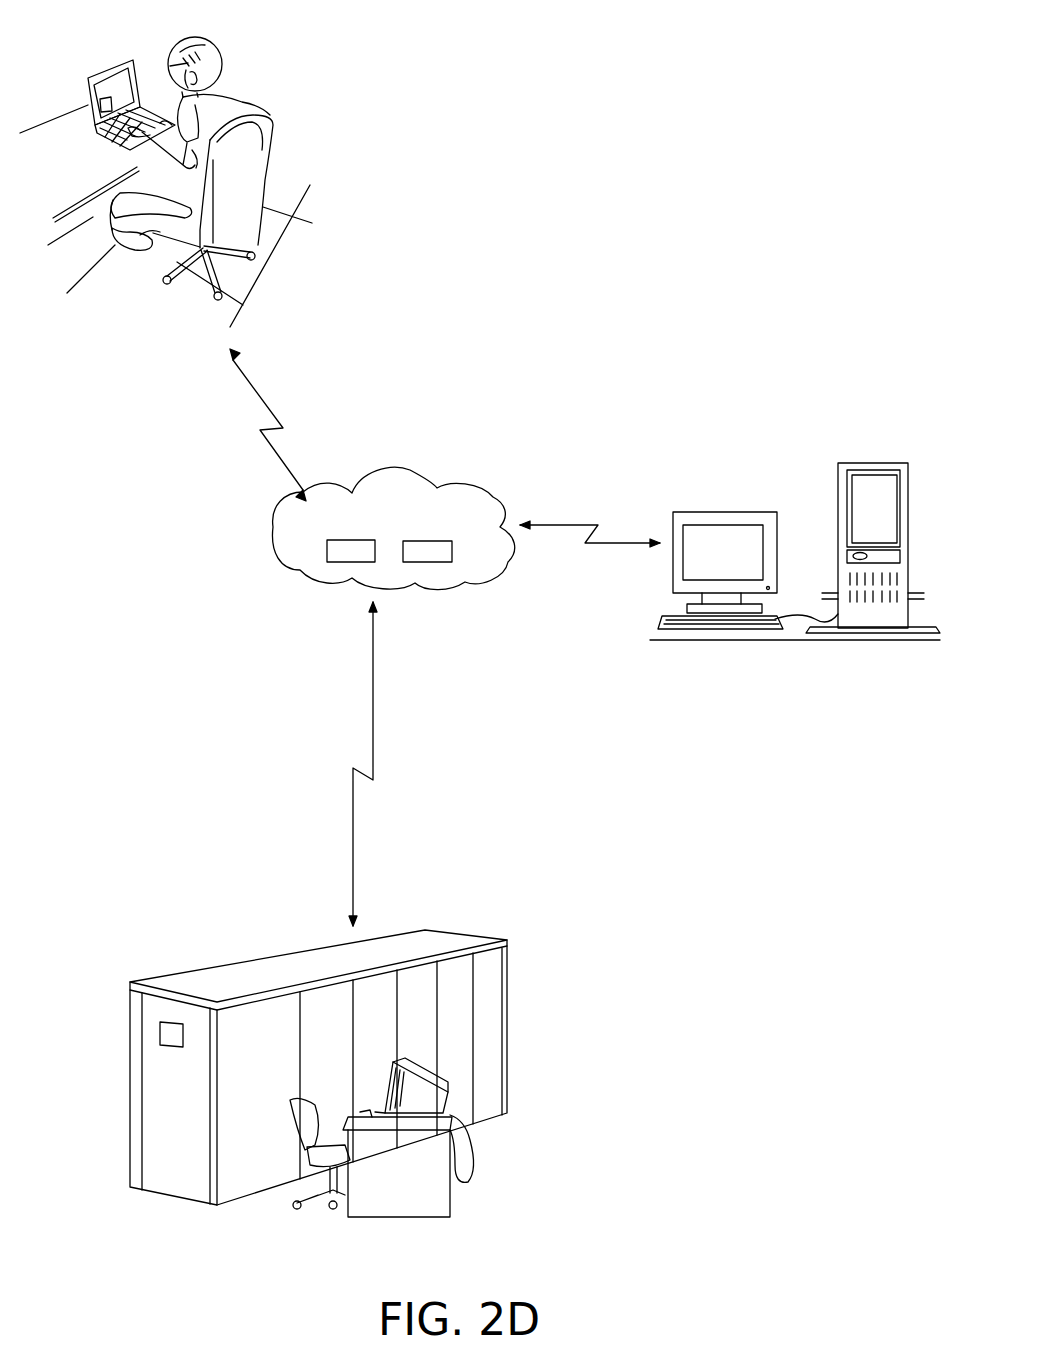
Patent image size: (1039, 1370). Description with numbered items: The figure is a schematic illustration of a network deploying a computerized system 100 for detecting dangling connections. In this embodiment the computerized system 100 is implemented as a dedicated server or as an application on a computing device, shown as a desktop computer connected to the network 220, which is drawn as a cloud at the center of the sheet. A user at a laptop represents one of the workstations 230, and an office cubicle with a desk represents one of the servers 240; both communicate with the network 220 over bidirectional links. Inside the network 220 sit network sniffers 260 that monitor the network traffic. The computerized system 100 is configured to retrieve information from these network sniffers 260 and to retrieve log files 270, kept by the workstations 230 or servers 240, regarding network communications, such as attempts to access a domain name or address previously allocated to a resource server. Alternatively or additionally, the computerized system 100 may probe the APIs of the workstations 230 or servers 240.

The computerized system 100 is at (858, 462).
The network 220 is at (470, 487).
The workstations 230 is at (102, 72).
The servers 240 is at (215, 963).
The network sniffers 260 is at (352, 564).
The log files 270 is at (100, 99).